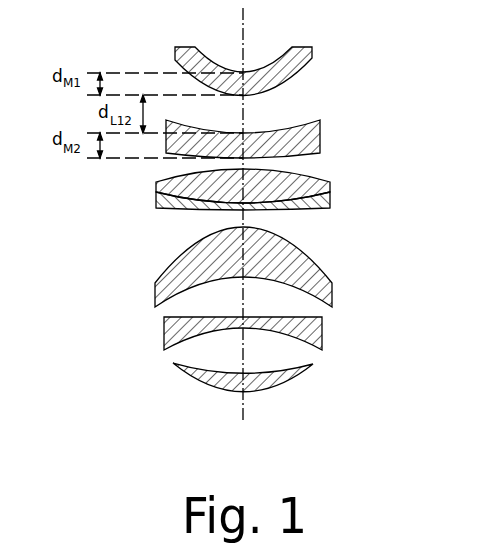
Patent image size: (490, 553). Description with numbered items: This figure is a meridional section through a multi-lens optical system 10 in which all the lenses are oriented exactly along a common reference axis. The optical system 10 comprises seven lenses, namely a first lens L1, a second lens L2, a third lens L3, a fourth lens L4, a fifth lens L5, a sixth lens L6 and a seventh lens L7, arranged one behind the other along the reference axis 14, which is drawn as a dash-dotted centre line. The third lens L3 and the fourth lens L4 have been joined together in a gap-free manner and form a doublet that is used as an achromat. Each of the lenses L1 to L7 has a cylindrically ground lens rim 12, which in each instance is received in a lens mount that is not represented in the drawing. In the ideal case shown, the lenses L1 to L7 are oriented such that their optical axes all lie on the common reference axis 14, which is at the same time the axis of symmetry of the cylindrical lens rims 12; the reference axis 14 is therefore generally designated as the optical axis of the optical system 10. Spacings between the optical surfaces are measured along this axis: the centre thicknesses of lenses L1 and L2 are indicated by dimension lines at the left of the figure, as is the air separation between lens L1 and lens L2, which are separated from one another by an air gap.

The optical system 10 is at (134, 229).
The cylindrically ground lens rim 12 is at (312, 50).
The reference axis 14 is at (243, 33).
The first lens L1 is at (280, 67).
The second lens L2 is at (320, 135).
The third lens L3 is at (330, 185).
The fourth lens L4 is at (329, 199).
The fifth lens L5 is at (332, 287).
The sixth lens L6 is at (315, 328).
The seventh lens L7 is at (313, 364).